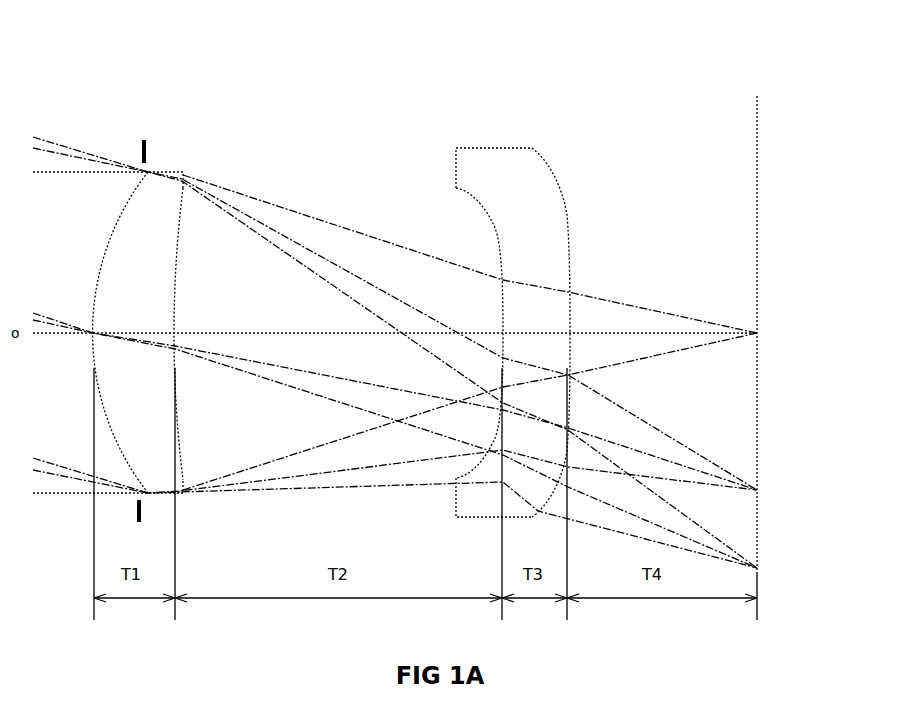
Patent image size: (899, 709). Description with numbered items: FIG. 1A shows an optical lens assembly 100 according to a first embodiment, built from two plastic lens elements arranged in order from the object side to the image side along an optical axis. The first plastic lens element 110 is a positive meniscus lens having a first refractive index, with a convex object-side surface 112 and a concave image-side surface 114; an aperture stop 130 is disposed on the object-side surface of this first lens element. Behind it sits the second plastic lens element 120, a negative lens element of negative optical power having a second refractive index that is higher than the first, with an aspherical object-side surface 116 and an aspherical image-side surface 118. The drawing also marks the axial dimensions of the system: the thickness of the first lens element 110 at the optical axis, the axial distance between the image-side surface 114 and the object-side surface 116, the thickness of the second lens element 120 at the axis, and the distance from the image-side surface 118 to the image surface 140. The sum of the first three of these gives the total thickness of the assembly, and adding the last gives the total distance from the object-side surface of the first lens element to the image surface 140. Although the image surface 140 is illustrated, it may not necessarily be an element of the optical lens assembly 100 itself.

The optical lens assembly 100 is at (723, 64).
The first plastic lens element 110 is at (114, 232).
The convex object-side surface 112 is at (120, 213).
The concave image-side surface 114 is at (179, 230).
The aspherical object-side surface 116 is at (493, 233).
The aspherical image-side surface 118 is at (565, 192).
The second plastic lens element 120 is at (496, 175).
The aperture stop 130 is at (145, 138).
The image surface 140 is at (753, 241).